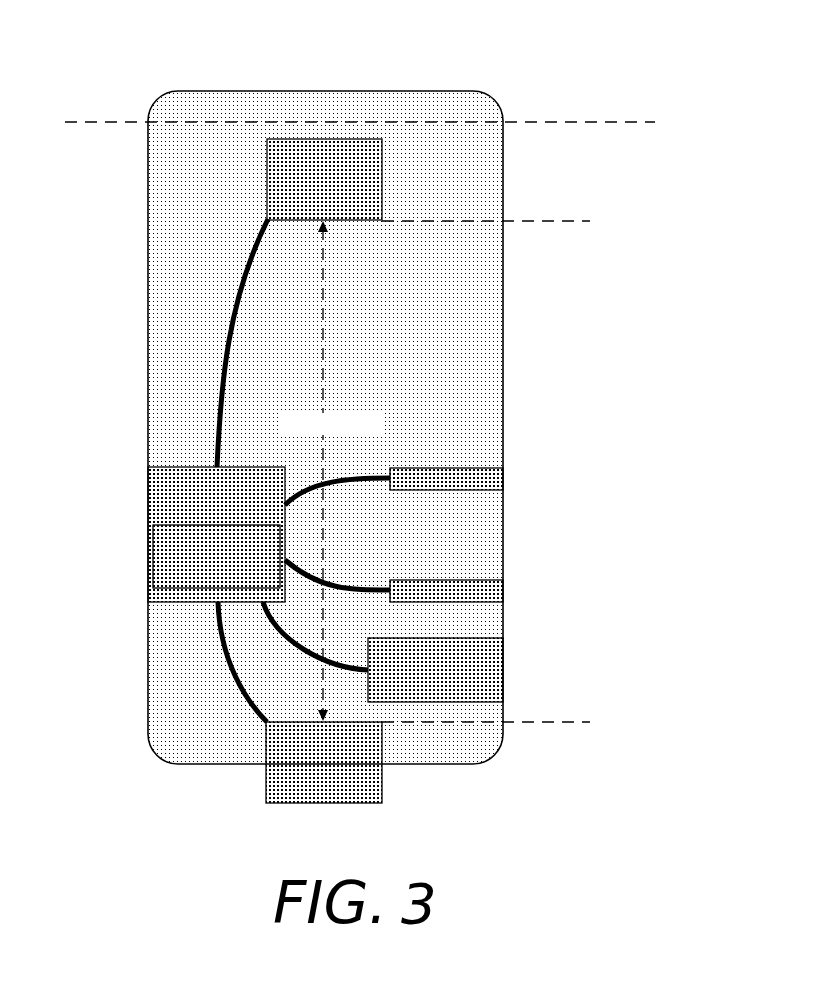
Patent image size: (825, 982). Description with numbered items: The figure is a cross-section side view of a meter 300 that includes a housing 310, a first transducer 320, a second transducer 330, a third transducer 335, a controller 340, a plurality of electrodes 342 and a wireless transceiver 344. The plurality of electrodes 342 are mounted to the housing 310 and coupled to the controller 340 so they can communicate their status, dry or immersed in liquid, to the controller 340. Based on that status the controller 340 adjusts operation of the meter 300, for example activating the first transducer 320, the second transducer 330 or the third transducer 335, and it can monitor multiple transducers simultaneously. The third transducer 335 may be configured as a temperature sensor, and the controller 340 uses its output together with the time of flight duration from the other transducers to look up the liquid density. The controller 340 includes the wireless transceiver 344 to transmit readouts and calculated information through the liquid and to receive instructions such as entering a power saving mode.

The meter 300 is at (692, 22).
The housing 310 is at (490, 93).
The first transducer 320 is at (322, 803).
The second transducer 330 is at (328, 139).
The third transducer 335 is at (503, 668).
The controller 340 is at (176, 467).
The plurality of electrodes 342 is at (496, 491).
The wireless transceiver 344 is at (153, 530).